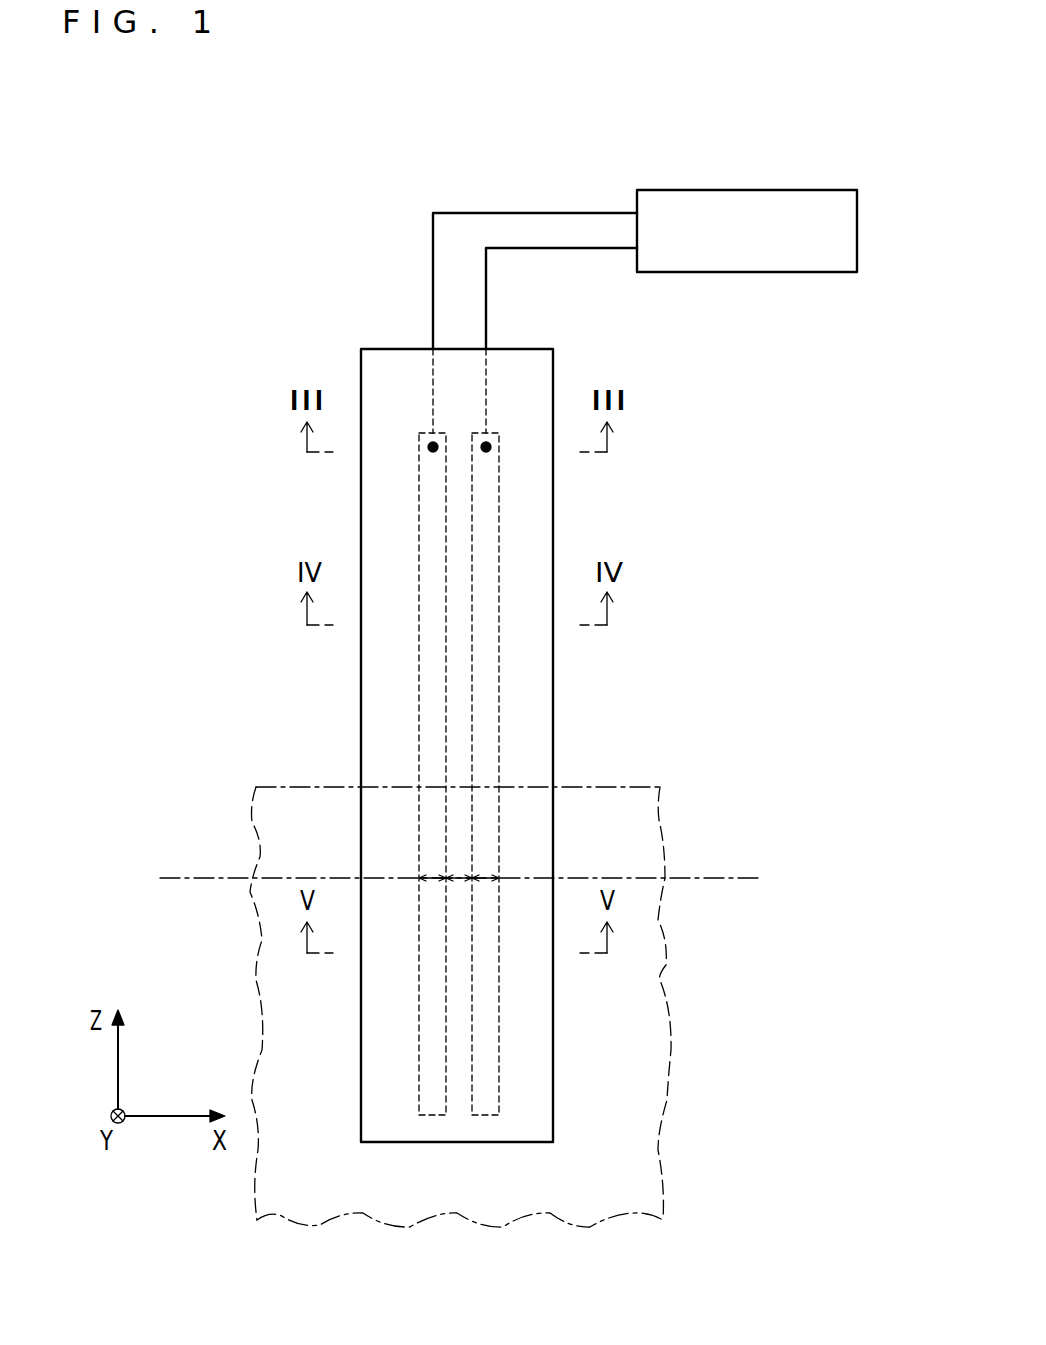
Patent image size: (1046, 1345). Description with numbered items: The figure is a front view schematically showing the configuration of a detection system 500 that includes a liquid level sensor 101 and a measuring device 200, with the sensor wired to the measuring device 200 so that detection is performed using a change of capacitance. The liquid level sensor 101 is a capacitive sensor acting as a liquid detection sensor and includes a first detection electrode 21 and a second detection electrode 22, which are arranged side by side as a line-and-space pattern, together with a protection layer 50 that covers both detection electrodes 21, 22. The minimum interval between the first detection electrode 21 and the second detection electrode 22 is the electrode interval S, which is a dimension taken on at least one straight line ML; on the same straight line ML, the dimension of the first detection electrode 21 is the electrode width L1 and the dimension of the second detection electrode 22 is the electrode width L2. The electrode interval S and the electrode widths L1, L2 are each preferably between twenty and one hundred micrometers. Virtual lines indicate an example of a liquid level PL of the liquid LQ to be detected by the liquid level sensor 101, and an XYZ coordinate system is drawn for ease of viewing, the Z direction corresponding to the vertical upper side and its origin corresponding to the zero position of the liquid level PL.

The detection system 500 is at (298, 157).
The measuring device 200 is at (767, 190).
The liquid level sensor 101 is at (573, 343).
The protection layer 50 is at (389, 1103).
The first detection electrode 21 is at (433, 1103).
The second detection electrode 22 is at (487, 1103).
The electrode width L1 is at (433, 872).
The electrode interval S is at (459, 872).
The electrode width L2 is at (485, 872).
The straight line ML is at (218, 878).
The liquid level PL is at (608, 787).
The liquid LQ is at (635, 832).